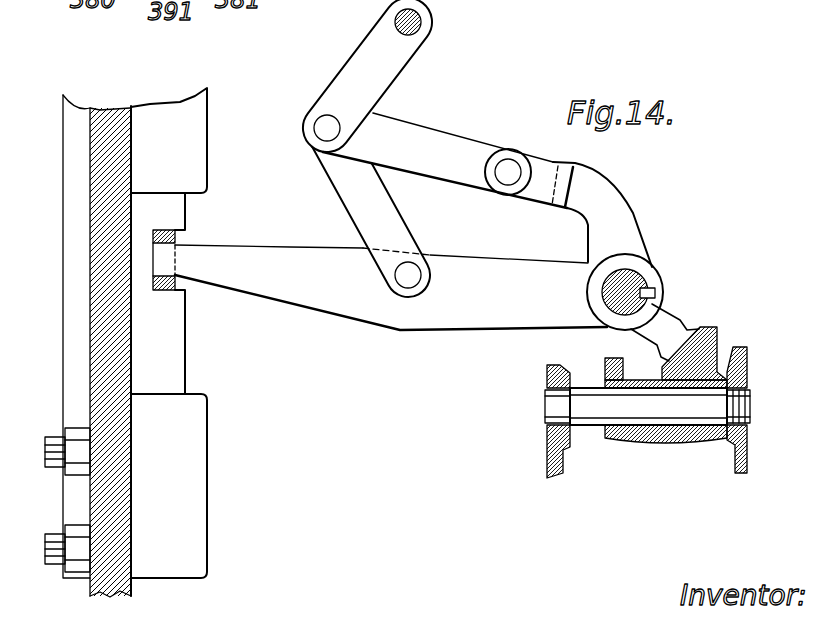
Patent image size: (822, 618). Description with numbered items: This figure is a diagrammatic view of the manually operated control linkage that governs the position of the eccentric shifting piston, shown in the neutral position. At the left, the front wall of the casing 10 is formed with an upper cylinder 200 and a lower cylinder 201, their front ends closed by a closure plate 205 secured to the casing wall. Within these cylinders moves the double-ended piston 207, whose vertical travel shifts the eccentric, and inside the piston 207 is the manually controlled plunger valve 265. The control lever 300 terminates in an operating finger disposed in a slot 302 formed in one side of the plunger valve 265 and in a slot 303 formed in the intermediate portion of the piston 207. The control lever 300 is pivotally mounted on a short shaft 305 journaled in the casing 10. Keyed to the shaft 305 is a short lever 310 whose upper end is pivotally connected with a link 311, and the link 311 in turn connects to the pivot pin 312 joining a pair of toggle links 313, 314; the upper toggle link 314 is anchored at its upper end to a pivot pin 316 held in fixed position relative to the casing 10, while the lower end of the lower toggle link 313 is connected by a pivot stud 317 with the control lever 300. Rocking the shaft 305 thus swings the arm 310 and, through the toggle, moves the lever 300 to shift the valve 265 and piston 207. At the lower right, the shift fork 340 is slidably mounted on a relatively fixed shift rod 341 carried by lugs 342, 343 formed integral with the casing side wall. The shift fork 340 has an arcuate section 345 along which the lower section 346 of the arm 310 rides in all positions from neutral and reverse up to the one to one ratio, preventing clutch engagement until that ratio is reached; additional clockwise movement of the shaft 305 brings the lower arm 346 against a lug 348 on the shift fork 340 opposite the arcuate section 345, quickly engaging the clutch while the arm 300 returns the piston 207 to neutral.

The casing 10 is at (106, 106).
The upper cylinder 200 is at (188, 157).
The lower cylinder 201 is at (193, 463).
The closure plate 205 is at (72, 282).
The double-ended piston 207 is at (172, 372).
The plunger valve 265 is at (168, 292).
The control lever 300 is at (336, 305).
The slot 302 is at (168, 243).
The slot 303 is at (188, 237).
The shaft 305 is at (640, 277).
The short lever 310 is at (622, 230).
The link 311 is at (455, 100).
The pivot pin 312 is at (327, 133).
The lower toggle link 313 is at (393, 231).
The upper toggle link 314 is at (378, 88).
The pivot pin 316 is at (422, 24).
The pivot stud 317 is at (423, 281).
The shift fork 340 is at (633, 443).
The shift rod 341 is at (585, 420).
The lug 342 is at (550, 467).
The lug 343 is at (733, 463).
The arcuate section 345 is at (717, 330).
The lower section 346 is at (662, 320).
The lug 348 is at (617, 358).